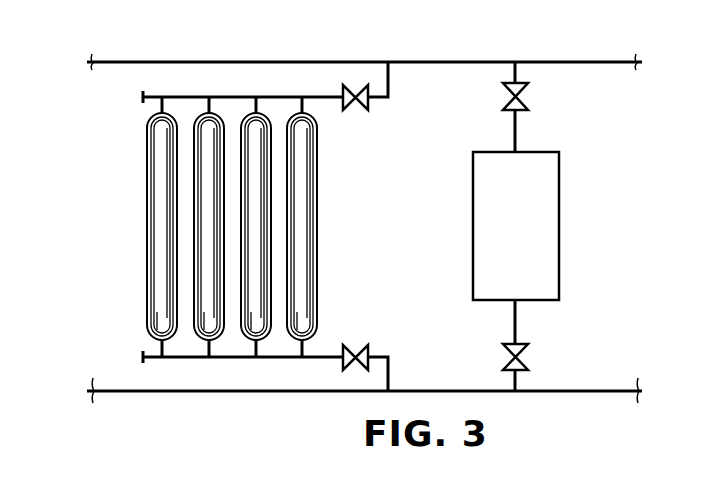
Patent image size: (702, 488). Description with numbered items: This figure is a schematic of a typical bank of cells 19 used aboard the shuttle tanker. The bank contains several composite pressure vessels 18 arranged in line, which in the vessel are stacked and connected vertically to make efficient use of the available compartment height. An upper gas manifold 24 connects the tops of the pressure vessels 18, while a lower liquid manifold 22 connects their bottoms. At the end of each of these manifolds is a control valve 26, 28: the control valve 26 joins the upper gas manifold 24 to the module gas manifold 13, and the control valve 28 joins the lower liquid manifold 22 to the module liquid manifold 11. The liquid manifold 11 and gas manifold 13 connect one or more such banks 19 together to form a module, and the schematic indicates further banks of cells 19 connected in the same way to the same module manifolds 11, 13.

The liquid manifold 11 is at (210, 391).
The gas manifold 13 is at (200, 62).
The pressure vessels 18 is at (157, 262).
The bank of cells 19 is at (559, 203).
The lower liquid manifold 22 is at (187, 358).
The upper gas manifold 24 is at (190, 96).
The control valve 26 is at (366, 103).
The control valve 28 is at (362, 345).